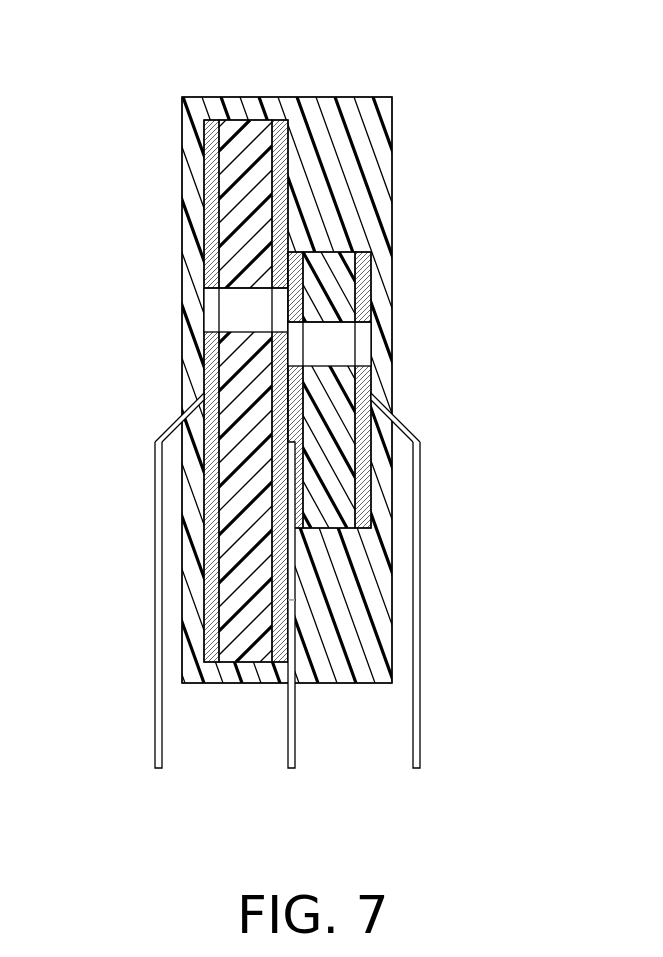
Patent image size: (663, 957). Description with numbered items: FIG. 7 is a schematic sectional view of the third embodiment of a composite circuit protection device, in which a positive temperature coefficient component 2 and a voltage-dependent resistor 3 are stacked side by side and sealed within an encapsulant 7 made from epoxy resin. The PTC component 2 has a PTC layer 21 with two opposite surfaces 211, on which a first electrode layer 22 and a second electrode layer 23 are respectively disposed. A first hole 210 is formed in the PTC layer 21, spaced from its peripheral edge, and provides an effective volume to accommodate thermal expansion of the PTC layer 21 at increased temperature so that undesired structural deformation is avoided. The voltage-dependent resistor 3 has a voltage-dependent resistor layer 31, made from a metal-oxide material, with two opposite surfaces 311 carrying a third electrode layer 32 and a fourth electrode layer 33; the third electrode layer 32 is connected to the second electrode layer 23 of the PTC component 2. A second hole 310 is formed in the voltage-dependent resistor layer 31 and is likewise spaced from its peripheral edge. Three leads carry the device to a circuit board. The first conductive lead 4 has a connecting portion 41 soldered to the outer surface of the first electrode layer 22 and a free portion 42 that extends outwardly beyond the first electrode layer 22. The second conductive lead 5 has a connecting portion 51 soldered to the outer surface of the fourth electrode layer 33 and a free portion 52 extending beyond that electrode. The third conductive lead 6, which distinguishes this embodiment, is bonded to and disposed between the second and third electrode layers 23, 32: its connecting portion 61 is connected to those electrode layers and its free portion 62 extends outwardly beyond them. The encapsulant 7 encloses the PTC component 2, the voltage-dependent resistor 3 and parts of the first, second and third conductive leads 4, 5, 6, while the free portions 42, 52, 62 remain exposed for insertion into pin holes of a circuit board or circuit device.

The encapsulant 7 is at (390, 108).
The positive temperature coefficient (PTC) component 2 is at (331, 342).
The PTC layer 21 is at (243, 122).
The first electrode layer 22 is at (218, 118).
The second electrode layer 23 is at (282, 118).
The first hole 210 is at (235, 320).
The opposite surfaces of the PTC layer 211 is at (272, 300).
The voltage-dependent resistor 3 is at (331, 333).
The voltage-dependent resistor layer 31 is at (322, 252).
The third electrode layer 32 is at (298, 250).
The fourth electrode layer 33 is at (360, 257).
The second hole 310 is at (337, 352).
The opposite surfaces of the voltage-dependent resistor layer 311 is at (357, 342).
The first conductive lead 4 is at (122, 580).
The connecting portion of the first conductive lead 41 is at (177, 418).
The free portion of the first conductive lead 42 is at (73, 440).
The second conductive lead 5 is at (448, 580).
The connecting portion of the second conductive lead 51 is at (400, 423).
The free portion of the second conductive lead 52 is at (422, 485).
The third conductive lead 6 is at (407, 605).
The connecting portion of the third conductive lead 61 is at (292, 480).
The free portion of the third conductive lead 62 is at (292, 652).